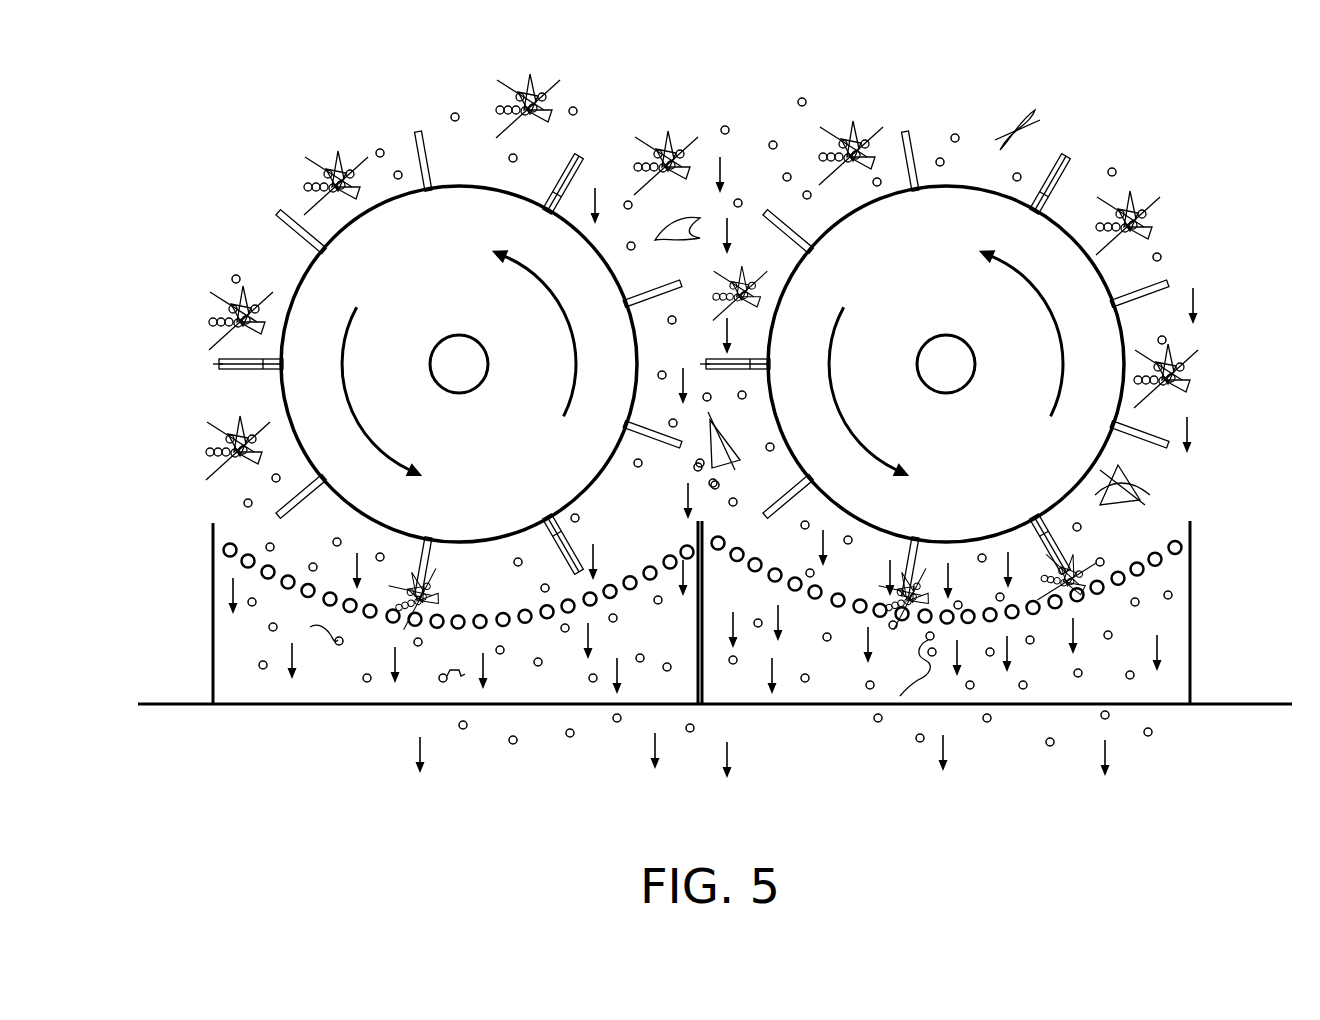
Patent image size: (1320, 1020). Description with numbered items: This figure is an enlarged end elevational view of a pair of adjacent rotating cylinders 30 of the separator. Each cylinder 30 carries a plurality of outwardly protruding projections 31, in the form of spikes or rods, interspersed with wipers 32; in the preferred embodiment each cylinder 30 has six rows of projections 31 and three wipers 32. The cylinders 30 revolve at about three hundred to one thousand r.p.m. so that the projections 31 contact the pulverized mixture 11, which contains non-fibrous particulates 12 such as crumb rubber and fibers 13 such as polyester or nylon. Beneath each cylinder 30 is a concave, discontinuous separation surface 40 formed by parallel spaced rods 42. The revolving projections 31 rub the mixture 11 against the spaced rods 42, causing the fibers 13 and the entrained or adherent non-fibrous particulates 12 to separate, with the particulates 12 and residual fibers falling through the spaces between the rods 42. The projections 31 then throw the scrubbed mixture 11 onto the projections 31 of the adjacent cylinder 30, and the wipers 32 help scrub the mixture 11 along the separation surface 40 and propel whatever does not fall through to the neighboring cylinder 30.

The pulverized mixture 11 is at (866, 126).
The non-fibrous particulates 12 is at (272, 479).
The fibers 13 is at (838, 142).
The cylinder 30 is at (702, 364).
The projections 31 is at (418, 128).
The wipers 32 is at (580, 156).
The discontinuous separation surface 40 is at (641, 577).
The spaced rods 42 is at (506, 627).